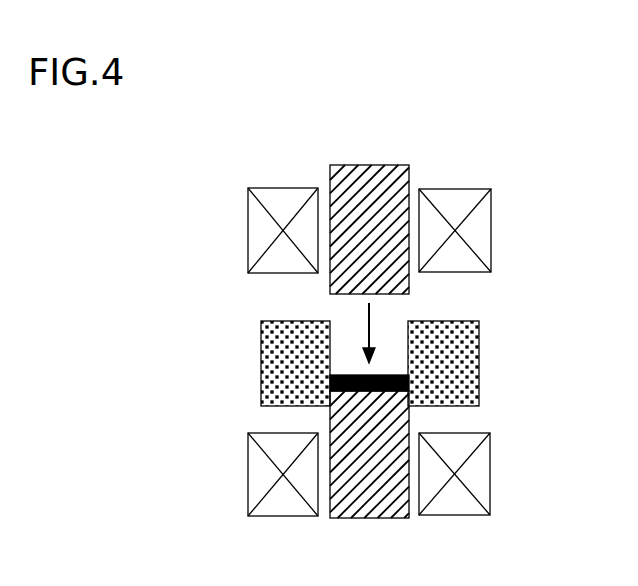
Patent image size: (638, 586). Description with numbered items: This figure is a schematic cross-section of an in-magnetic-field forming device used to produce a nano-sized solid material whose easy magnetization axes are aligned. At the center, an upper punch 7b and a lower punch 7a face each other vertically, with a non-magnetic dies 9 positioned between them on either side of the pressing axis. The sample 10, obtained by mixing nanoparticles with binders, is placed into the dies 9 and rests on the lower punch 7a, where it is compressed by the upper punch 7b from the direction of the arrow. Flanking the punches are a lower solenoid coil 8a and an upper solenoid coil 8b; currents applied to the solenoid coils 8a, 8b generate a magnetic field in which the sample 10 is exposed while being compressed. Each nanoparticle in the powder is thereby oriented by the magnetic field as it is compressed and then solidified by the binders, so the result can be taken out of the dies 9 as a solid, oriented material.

The lower punch 7a is at (369, 472).
The upper punch 7b is at (369, 214).
The lower solenoid coil 8a is at (390, 474).
The upper solenoid coil 8b is at (390, 230).
The non-magnetic dies 9 is at (383, 363).
The sample 10 is at (359, 377).